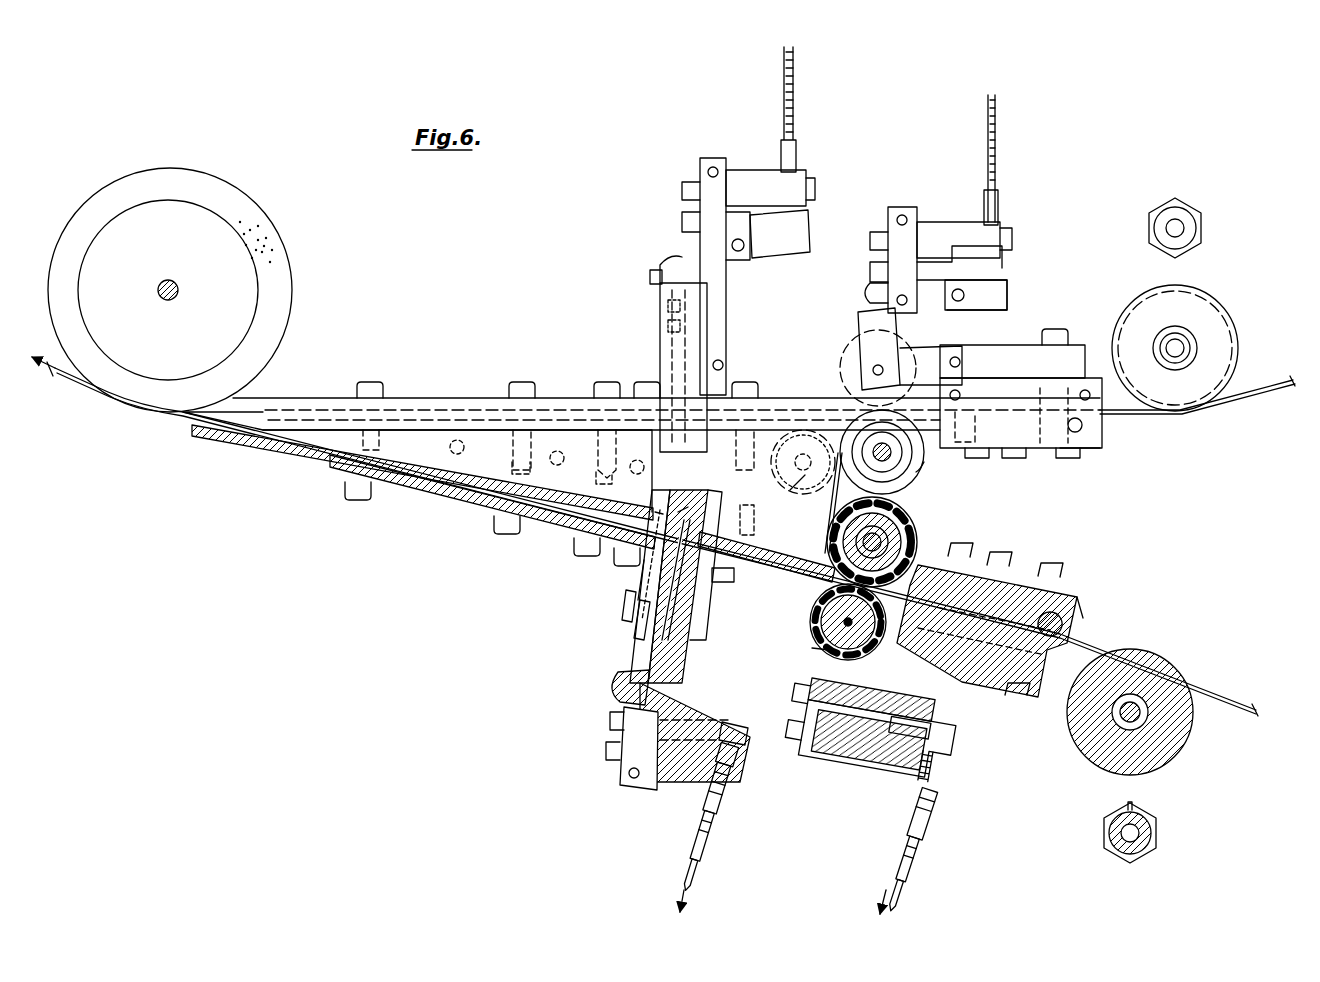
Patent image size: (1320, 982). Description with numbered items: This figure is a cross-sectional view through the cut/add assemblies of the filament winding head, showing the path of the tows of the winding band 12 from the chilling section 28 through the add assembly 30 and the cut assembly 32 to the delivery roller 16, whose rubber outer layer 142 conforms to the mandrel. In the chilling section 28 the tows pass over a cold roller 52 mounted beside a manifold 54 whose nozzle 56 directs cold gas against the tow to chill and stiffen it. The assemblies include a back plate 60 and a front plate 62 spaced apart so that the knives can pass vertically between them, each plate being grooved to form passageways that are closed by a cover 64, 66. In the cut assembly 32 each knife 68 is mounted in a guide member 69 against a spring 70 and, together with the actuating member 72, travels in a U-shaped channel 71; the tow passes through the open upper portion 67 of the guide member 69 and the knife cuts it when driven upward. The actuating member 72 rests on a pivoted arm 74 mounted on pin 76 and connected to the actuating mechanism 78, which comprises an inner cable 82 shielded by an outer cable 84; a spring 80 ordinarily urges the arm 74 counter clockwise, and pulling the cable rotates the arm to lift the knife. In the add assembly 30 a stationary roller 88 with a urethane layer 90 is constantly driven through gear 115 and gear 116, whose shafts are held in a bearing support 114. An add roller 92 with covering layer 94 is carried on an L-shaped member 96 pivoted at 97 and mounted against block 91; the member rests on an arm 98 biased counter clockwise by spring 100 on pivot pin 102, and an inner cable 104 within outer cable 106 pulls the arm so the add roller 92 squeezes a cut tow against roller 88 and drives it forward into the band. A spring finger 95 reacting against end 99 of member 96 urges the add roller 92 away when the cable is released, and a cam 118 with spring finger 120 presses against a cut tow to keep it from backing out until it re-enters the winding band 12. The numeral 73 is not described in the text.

The winding band 12 is at (62, 382).
The delivery roller 16 is at (216, 173).
The rubber outer layer 142 is at (268, 238).
The chilling section 28 is at (1237, 296).
The add assembly 30 is at (1057, 268).
The cut assembly 32 is at (634, 266).
The cold roller 52 is at (1218, 348).
The manifold 54 is at (1190, 238).
The nozzle 56 is at (1132, 808).
The back plate 60 is at (760, 490).
The front plate 62 is at (432, 430).
The cover 64 is at (808, 425).
The cover 66 is at (432, 500).
The open upper portion 67 is at (669, 576).
The knife 68 is at (650, 560).
The guide member 69 is at (700, 512).
The spring 70 is at (640, 590).
The U-shaped channel 71 is at (622, 615).
The actuating member 72 is at (636, 628).
The screw 73 is at (705, 582).
The pivoted arm 74 is at (635, 690).
The pin 76 is at (640, 728).
The actuating mechanism 78 is at (730, 842).
The spring 80 is at (742, 750).
The inner cable 82 is at (697, 910).
The outer cable 84 is at (695, 866).
The stationary roller 88 is at (906, 442).
The urethane layer 90 is at (900, 544).
The block 91 is at (1072, 590).
The add roller 92 is at (858, 360).
The covering layer 94 is at (812, 648).
The spring finger 95 is at (1050, 680).
The L-shaped member 96 is at (812, 688).
The pivot 97 is at (955, 665).
The arm 98 is at (905, 680).
The end 99 is at (985, 685).
The spring 100 is at (945, 748).
The pivot pin 102 is at (892, 690).
The inner cable 104 is at (905, 910).
The outer cable 106 is at (915, 880).
The bearing support 114 is at (830, 500).
The gear 115 is at (800, 455).
The gear 116 is at (920, 500).
The cam 118 is at (1104, 440).
The spring finger 120 is at (1080, 452).